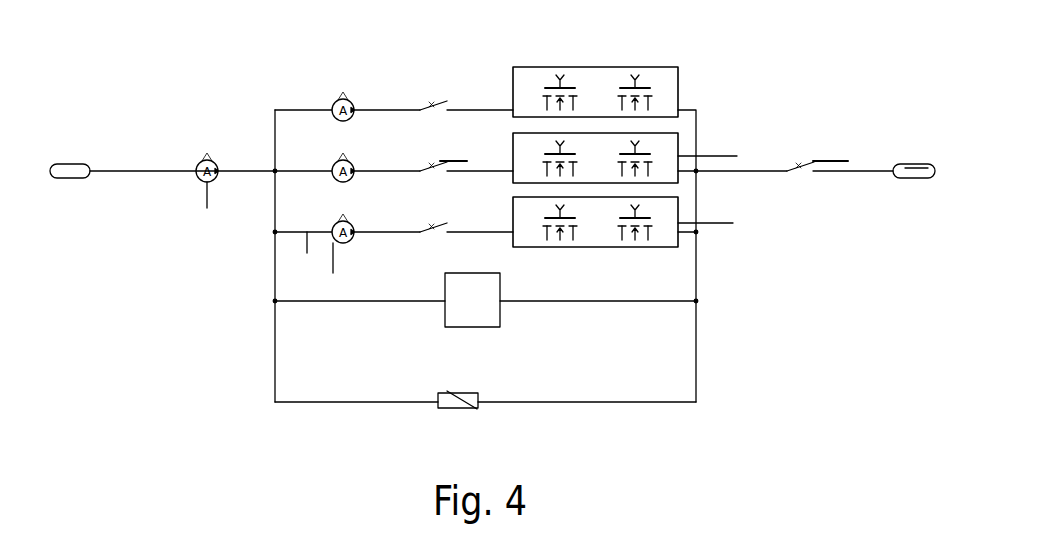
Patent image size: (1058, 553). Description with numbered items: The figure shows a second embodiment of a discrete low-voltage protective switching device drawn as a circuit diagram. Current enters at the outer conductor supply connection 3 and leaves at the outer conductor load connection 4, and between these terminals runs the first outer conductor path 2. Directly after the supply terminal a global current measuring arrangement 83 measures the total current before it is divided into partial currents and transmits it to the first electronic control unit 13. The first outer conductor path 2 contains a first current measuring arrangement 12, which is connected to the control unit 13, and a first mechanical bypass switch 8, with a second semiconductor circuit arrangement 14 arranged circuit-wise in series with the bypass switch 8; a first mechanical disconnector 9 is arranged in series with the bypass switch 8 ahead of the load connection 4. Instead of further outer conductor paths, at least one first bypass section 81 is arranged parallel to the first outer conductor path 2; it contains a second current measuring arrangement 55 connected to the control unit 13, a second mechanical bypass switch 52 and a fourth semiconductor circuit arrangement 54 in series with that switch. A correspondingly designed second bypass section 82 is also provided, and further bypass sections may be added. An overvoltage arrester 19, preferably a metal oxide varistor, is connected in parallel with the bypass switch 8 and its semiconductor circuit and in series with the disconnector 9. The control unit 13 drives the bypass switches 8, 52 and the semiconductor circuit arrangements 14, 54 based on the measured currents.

The first outer conductor path 2 is at (258, 247).
The outer conductor supply connection 3 is at (83, 178).
The outer conductor load connection 4 is at (923, 137).
The first mechanical bypass switch 8 is at (476, 157).
The first mechanical disconnector 9 is at (838, 140).
The first current measuring arrangement 12 is at (279, 78).
The first electronic control unit 13 is at (485, 320).
The second semiconductor circuit arrangement 14 is at (726, 243).
The overvoltage arrester 19 is at (472, 407).
The second mechanical bypass switch 52 is at (423, 232).
The fourth semiconductor circuit arrangement 54 is at (732, 187).
The second current measuring arrangement 55 is at (296, 261).
The first bypass section 81 is at (287, 243).
The second bypass section 82 is at (433, 82).
The global current measuring arrangement 83 is at (182, 188).